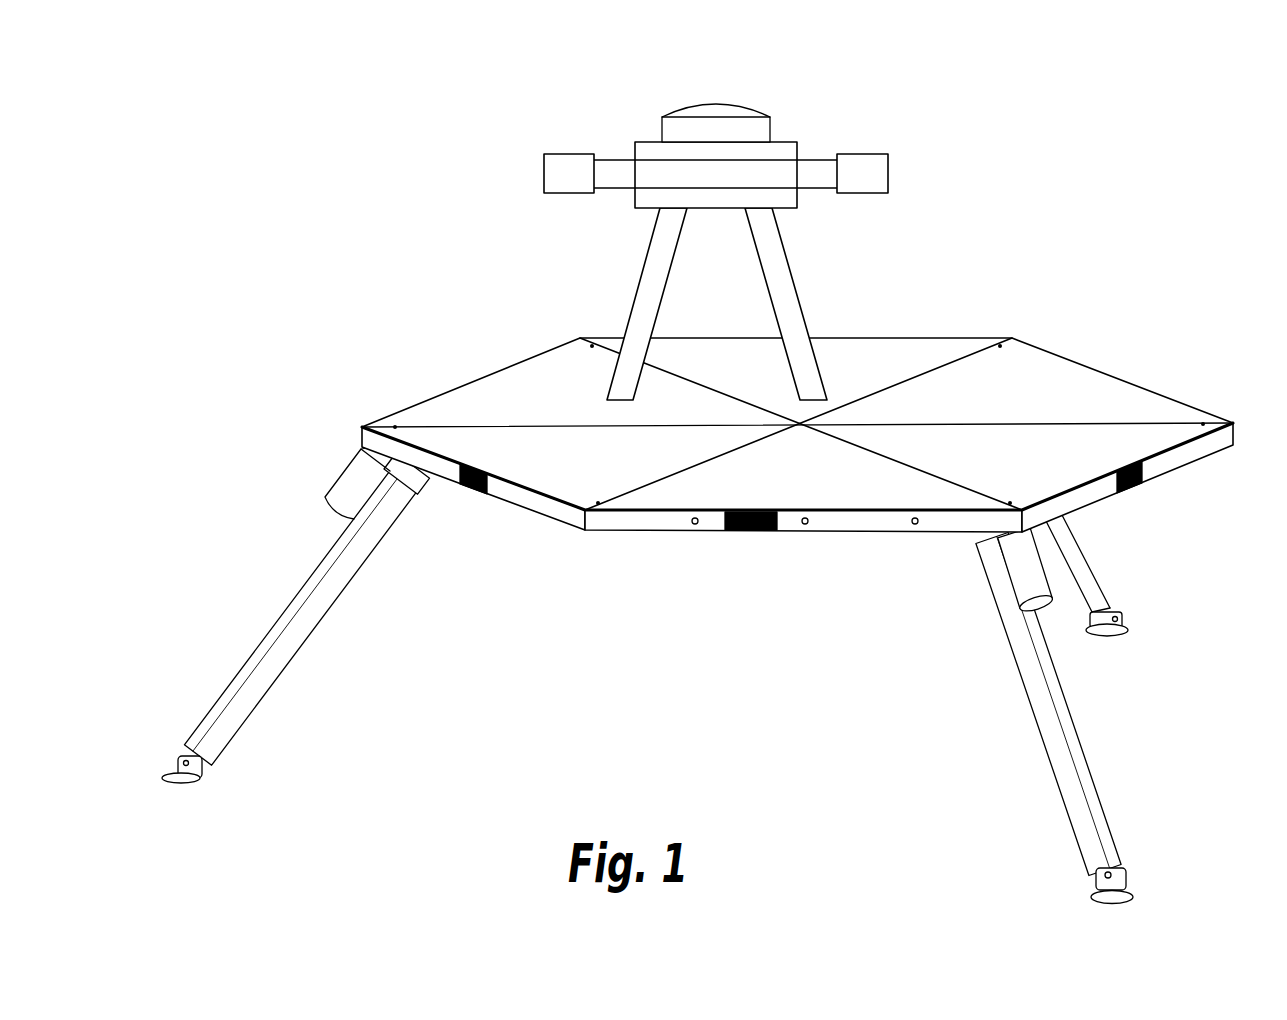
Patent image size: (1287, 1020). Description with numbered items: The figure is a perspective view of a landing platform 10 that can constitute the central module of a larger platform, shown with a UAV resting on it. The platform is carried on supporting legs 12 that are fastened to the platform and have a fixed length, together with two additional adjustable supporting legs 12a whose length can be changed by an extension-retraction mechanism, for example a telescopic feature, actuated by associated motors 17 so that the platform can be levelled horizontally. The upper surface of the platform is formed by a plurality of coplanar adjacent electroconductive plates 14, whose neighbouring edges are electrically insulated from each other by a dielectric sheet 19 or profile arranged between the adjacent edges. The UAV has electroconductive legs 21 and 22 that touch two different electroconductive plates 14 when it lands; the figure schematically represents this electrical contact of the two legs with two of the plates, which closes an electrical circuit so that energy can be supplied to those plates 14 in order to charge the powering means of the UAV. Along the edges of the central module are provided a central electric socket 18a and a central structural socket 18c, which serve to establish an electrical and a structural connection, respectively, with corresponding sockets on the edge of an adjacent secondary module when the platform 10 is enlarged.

The landing platform 10 is at (400, 366).
The supporting legs 12 is at (1066, 541).
The adjustable supporting legs 12a is at (302, 636).
The electroconductive plates 14 is at (1090, 397).
The motors 17 is at (357, 488).
The central electric socket 18a is at (748, 528).
The central structural socket 18c is at (690, 528).
The dielectric sheet 19 is at (948, 362).
The electroconductive leg 21 is at (660, 250).
The electroconductive leg 22 is at (772, 253).
The element UAV is at (621, 108).